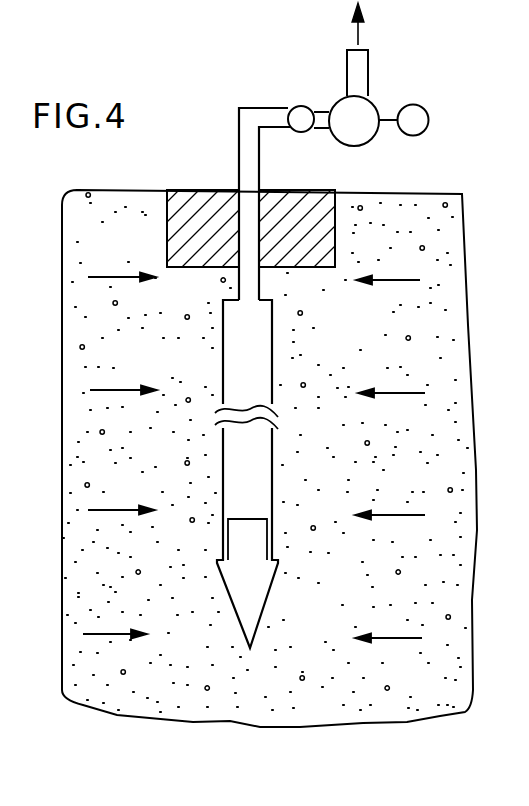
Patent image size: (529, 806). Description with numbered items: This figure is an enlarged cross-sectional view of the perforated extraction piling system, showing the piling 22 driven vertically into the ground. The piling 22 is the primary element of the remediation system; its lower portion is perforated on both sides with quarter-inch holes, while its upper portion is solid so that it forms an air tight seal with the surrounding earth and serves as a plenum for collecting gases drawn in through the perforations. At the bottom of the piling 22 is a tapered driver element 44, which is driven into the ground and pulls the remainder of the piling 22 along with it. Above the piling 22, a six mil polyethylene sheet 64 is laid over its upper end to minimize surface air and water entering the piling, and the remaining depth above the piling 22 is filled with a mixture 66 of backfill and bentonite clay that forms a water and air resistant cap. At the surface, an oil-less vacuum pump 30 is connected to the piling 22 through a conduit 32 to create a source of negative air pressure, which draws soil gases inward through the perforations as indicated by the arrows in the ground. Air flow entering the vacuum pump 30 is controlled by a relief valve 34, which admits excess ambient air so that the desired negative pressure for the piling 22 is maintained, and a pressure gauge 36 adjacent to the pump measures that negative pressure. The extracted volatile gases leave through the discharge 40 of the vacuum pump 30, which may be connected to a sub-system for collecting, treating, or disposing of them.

The vacuum pump 30 is at (392, 75).
The conduit 32 is at (239, 108).
The relief valve 34 is at (300, 133).
The pressure gauge 36 is at (429, 122).
The discharge 40 is at (347, 74).
The piling 22 is at (212, 371).
The tapered driver element 44 is at (270, 598).
The polyethylene sheet 64 is at (312, 270).
The mixture of backfill and bentonite clay 66 is at (168, 215).